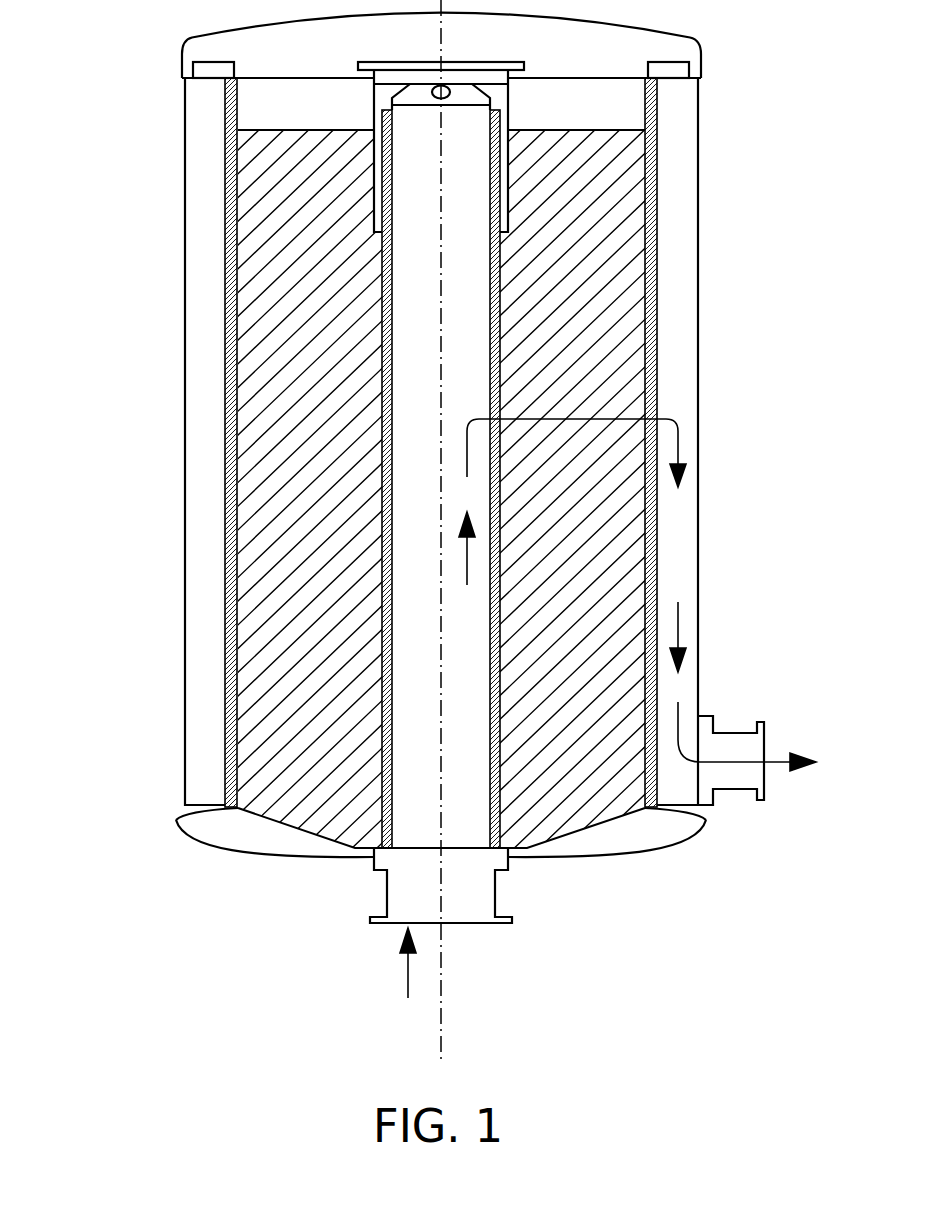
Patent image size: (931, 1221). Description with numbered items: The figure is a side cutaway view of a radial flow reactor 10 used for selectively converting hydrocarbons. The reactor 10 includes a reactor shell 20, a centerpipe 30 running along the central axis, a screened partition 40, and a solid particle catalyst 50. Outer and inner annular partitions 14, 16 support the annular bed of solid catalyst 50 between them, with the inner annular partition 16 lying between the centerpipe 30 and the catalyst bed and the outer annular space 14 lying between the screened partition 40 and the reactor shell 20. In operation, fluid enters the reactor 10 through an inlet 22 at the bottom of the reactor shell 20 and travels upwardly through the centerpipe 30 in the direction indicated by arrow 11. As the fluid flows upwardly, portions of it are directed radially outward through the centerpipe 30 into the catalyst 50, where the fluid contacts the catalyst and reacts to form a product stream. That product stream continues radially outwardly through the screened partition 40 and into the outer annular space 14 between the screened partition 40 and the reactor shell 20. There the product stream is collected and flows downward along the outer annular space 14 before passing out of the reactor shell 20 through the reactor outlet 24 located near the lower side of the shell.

The radial flow reactor 10 is at (122, 747).
The arrow 11 is at (407, 970).
The outer annular space 14 is at (193, 174).
The inner annular partition 16 is at (613, 203).
The reactor shell 20 is at (185, 300).
The inlet 22 is at (463, 923).
The reactor outlet 24 is at (737, 732).
The centerpipe 30 is at (391, 297).
The screened partition 40 is at (225, 424).
The solid particle catalyst 50 is at (327, 704).